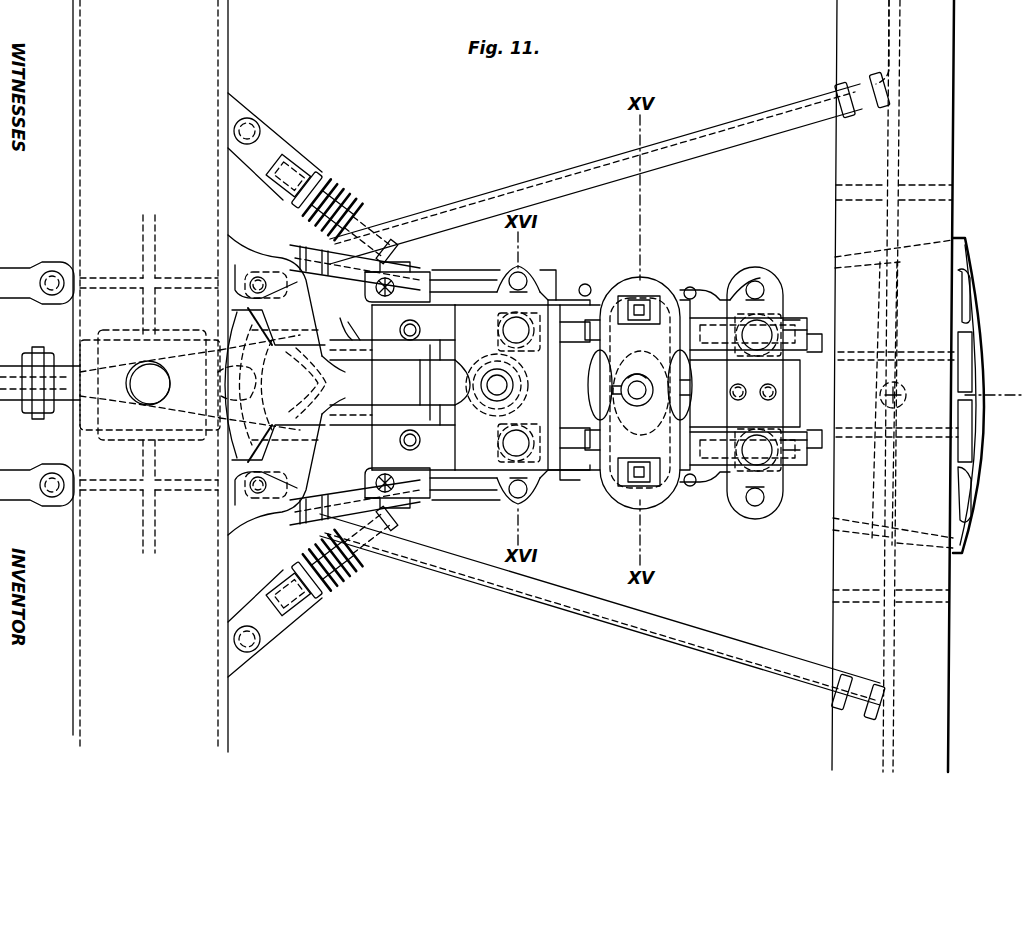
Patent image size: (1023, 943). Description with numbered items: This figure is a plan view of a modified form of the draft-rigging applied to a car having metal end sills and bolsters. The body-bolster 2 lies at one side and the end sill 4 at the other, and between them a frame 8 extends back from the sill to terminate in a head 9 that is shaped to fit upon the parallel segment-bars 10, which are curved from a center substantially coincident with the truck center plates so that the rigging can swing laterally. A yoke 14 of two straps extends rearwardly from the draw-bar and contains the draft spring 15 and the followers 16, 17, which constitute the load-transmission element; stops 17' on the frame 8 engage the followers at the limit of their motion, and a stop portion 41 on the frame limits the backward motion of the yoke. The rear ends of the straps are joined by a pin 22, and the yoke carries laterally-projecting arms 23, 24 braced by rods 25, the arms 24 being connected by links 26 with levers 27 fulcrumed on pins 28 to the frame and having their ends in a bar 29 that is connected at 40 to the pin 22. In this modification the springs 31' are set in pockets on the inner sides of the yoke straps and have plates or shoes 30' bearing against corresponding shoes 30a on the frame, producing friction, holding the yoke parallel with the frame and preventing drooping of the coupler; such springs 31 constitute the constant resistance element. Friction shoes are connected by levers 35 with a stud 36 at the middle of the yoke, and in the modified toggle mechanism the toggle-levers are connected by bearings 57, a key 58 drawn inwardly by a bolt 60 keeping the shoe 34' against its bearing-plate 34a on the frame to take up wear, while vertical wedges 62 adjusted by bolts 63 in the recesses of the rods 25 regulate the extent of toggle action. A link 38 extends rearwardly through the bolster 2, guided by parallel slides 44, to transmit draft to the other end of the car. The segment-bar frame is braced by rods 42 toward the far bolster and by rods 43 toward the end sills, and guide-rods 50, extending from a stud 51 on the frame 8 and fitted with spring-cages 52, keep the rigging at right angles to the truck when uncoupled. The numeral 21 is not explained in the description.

The body-bolster 2 is at (150, 376).
The end sill 4 is at (893, 386).
The frame 8 is at (580, 385).
The head 9 is at (272, 385).
The segment-bars 10 is at (286, 385).
The yoke 14 is at (773, 383).
The draft spring 15 is at (640, 367).
The follower 16 is at (620, 392).
The follower 17 is at (639, 353).
The stops 17' is at (704, 437).
The spring seat 21 is at (896, 376).
The pin 22 is at (497, 385).
The laterally-projecting arm 23 is at (783, 312).
The laterally-projecting arm 24 is at (517, 415).
The rods 25 is at (614, 399).
The links 26 is at (455, 282).
The levers 27 is at (392, 387).
The pins 28 is at (380, 320).
The bar 29 is at (346, 352).
The plates or shoes 30a is at (490, 280).
The plates or shoes 30' is at (808, 415).
The springs 31 is at (557, 265).
The springs 31' is at (797, 412).
The shoe 34' is at (643, 462).
The bearing-plate 34a is at (583, 507).
The levers 35 is at (740, 300).
The stud 36 is at (692, 399).
The link 38 is at (150, 385).
The connection 40 is at (443, 382).
The stop portion 41 is at (421, 382).
The rods 42 is at (37, 376).
The rods 43 is at (660, 160).
The parallel slides 44 is at (149, 384).
The guide-rods 50 is at (345, 220).
The stud 51 is at (529, 389).
The spring-cages 52 is at (365, 412).
The bearings 57 is at (672, 417).
The key 58 is at (640, 381).
The bolt 60 is at (640, 300).
The wedges 62 is at (663, 394).
The bolts 63 is at (634, 398).